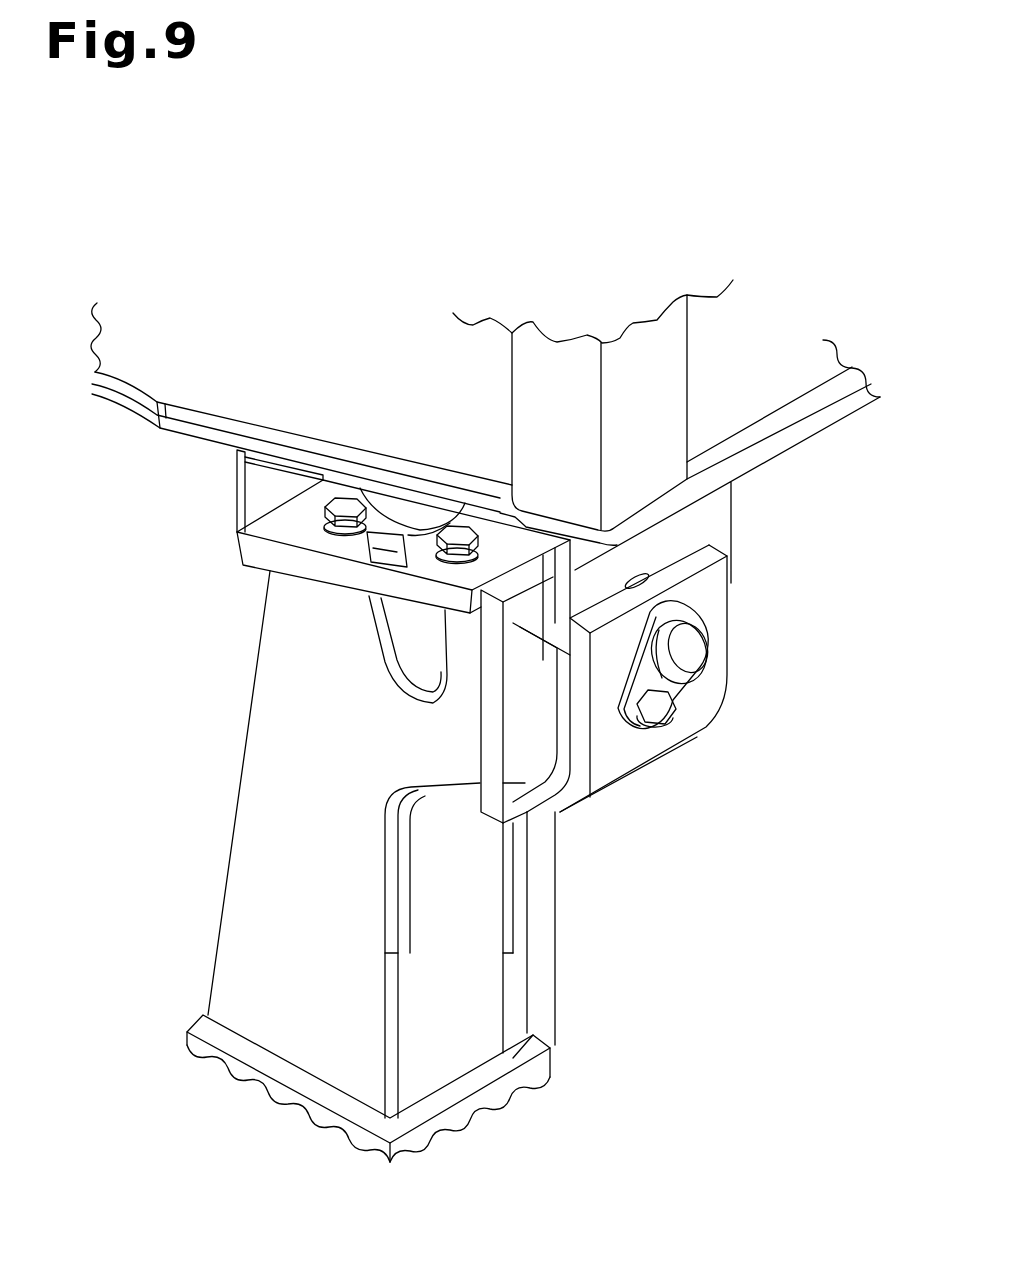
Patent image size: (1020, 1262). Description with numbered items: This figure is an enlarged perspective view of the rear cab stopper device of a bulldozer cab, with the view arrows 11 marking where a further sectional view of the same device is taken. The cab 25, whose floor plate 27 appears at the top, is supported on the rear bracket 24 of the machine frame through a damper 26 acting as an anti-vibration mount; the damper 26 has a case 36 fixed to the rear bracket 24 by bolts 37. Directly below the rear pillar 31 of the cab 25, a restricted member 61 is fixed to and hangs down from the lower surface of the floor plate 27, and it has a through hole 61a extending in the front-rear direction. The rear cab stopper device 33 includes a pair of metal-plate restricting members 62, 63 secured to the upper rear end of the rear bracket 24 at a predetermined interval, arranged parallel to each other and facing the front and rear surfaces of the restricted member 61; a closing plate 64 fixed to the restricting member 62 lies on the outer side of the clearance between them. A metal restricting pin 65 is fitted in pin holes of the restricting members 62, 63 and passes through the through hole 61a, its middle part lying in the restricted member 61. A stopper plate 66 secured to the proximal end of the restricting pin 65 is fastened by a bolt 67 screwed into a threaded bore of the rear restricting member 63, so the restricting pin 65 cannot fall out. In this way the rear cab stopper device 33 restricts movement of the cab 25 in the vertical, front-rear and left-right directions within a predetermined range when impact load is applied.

The frame 11 is at (688, 262).
The rear bracket 24 is at (232, 910).
The cab 25 is at (107, 408).
The damper 26 is at (377, 498).
The floor plate 27 is at (150, 428).
The rear pillar 31 is at (673, 350).
The rear cab stopper device 33 is at (744, 607).
The case 36 is at (430, 533).
The bolt 37 is at (328, 500).
The restricted member 61 is at (723, 520).
The through hole 61a is at (647, 576).
The restricting member 62 is at (490, 740).
The restricting member 63 is at (623, 767).
The closing plate 64 is at (525, 783).
The restricting pin 65 is at (693, 652).
The stopper plate 66 is at (677, 688).
The bolt 67 is at (660, 720).